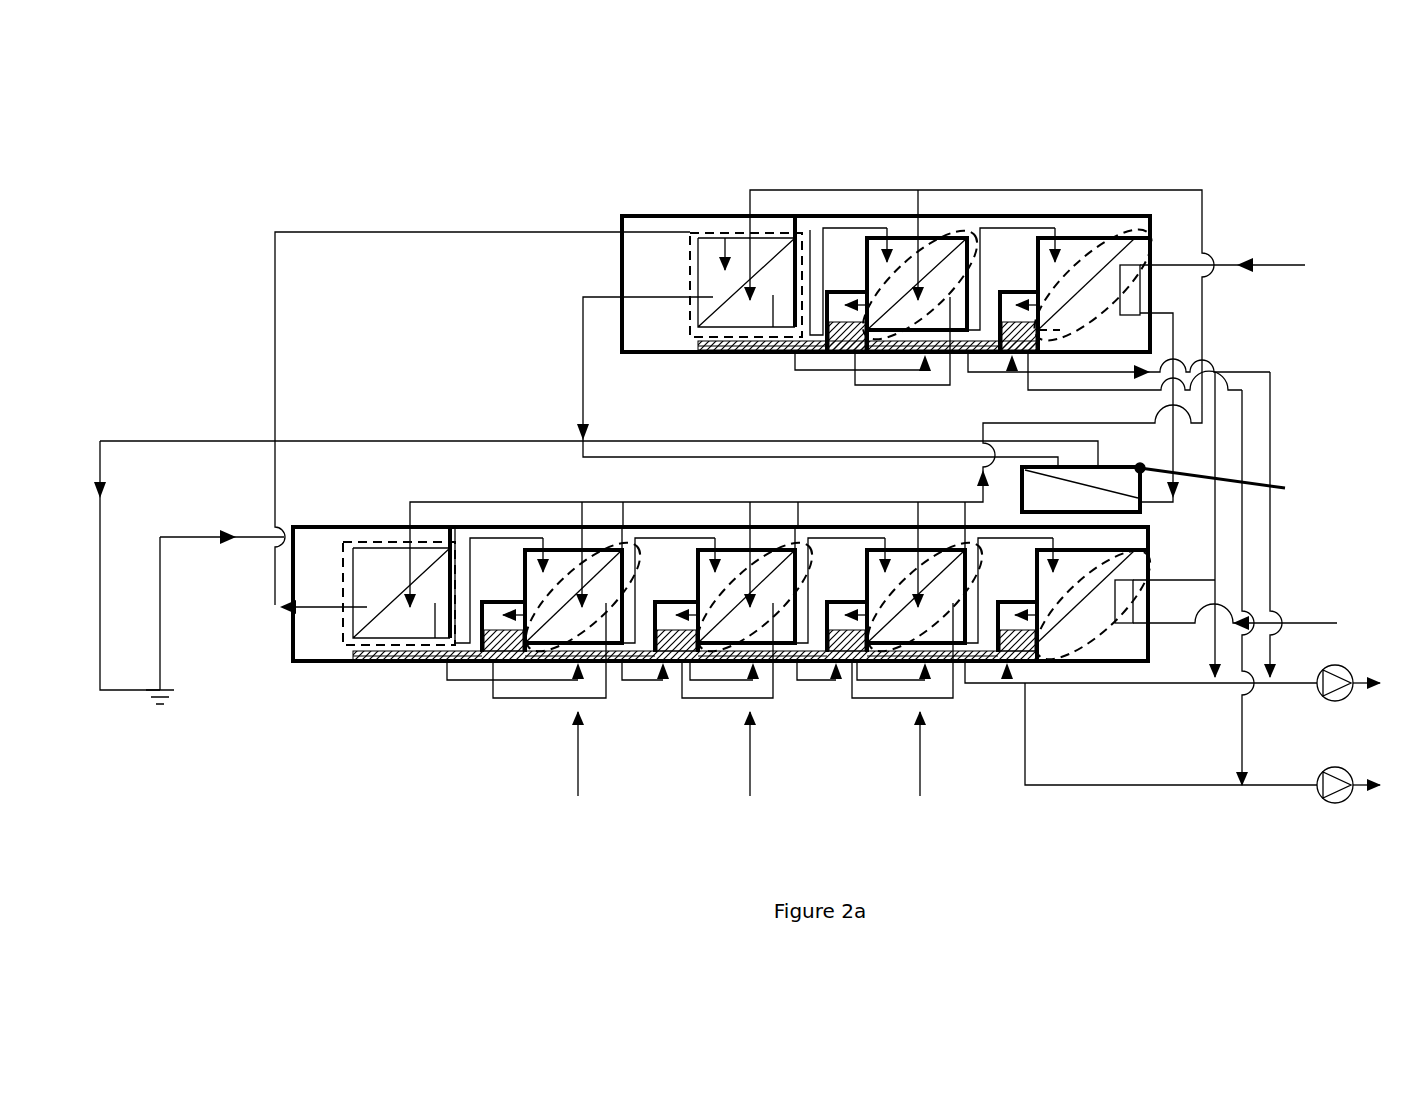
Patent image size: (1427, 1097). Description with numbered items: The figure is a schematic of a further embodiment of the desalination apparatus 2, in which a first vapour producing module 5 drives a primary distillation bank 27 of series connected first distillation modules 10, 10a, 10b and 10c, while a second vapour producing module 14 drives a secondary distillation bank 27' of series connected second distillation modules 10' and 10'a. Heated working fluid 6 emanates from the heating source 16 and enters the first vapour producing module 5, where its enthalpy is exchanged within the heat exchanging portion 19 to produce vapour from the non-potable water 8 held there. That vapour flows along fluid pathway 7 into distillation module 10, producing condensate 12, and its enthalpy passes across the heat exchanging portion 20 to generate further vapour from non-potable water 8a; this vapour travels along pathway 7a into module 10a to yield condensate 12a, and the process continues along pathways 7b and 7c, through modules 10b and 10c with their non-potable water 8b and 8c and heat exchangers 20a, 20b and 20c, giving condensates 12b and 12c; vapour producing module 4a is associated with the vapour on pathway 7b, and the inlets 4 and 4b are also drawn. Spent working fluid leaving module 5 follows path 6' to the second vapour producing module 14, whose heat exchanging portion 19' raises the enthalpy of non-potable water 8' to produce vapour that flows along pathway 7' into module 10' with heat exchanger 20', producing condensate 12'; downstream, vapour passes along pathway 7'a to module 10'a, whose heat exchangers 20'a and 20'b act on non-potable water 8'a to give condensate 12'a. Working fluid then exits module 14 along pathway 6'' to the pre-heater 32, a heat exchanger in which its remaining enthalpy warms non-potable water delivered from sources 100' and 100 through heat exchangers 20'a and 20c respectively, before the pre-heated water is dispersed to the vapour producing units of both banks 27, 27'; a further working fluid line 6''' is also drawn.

The apparatus 2 is at (195, 808).
The feed inlet 4 is at (578, 766).
The vapour producing module 4a is at (750, 766).
The feed inlet 4b is at (919, 766).
The first vapour producing module 5 is at (393, 667).
The heated working fluid 6 is at (222, 574).
The path for working fluid 6' is at (482, 381).
The pathway for working fluid 6'' is at (787, 382).
The electrolyte return line 6''' is at (599, 404).
The fluid pathway 7 is at (497, 550).
The pathway 7' is at (848, 225).
The pathway 7a is at (660, 535).
The flow channel 7'a is at (1013, 238).
The pathway 7b is at (840, 530).
The pathway 7c is at (1007, 530).
The non-potable water 8 is at (417, 698).
The non-potable water 8' is at (762, 372).
The non-potable water 8a is at (633, 663).
The non-potable water 8'a is at (919, 393).
The non-potable water 8b is at (805, 663).
The non-potable water 8c is at (957, 663).
The first distillation module 10 is at (534, 573).
The distillation module 10' is at (901, 251).
The second distillation module 10a is at (738, 567).
The distillation module 10'a is at (1107, 243).
The distillation module 10b is at (885, 535).
The distillation module 10c is at (1097, 563).
The condensate 12 is at (544, 685).
The condensate 12' is at (877, 351).
The condensate 12a is at (677, 663).
The condensate 12'a is at (1161, 322).
The condensate 12b is at (853, 663).
The condensate 12c is at (1057, 663).
The second vapour producing module 14 is at (728, 188).
The heating source 16 is at (162, 706).
The heat exchanging portion 19 is at (356, 644).
The inlet chamber 19' is at (661, 230).
The heat exchanging portion 20 is at (582, 662).
The electrode 20' is at (919, 227).
The electrode 20a is at (762, 630).
The heat exchanger 20'a is at (1145, 284).
The electrode 20b is at (937, 630).
The electrode 20'b is at (1167, 255).
The heat exchanger 20c is at (1100, 630).
The primary distillation bank 27 is at (836, 535).
The secondary distillation bank 27' is at (982, 115).
The pre-heater 32 is at (1140, 468).
The non-potable water source 100 is at (1237, 578).
The non-potable water source 100' is at (1246, 264).